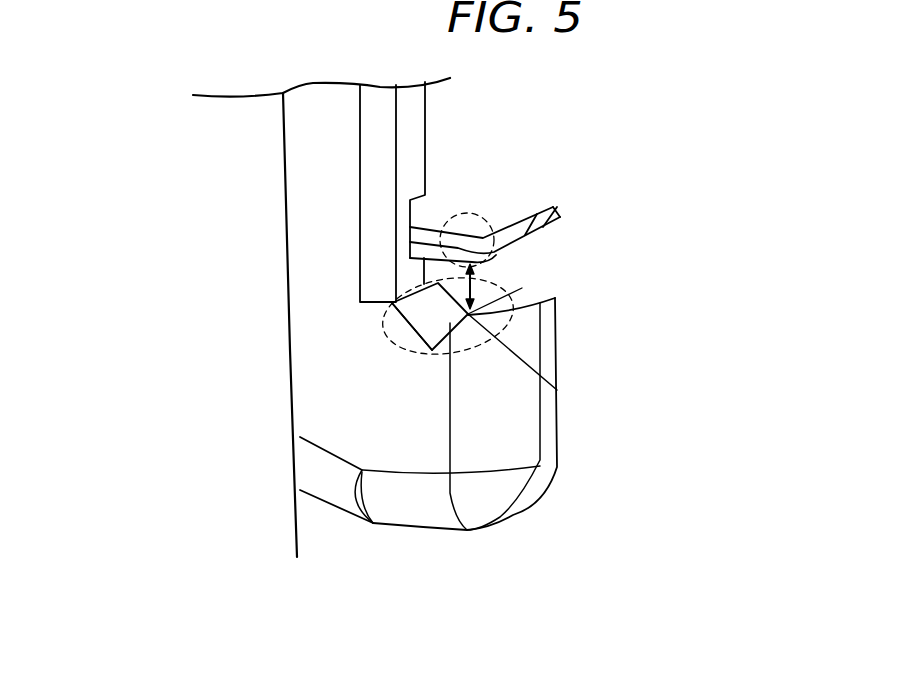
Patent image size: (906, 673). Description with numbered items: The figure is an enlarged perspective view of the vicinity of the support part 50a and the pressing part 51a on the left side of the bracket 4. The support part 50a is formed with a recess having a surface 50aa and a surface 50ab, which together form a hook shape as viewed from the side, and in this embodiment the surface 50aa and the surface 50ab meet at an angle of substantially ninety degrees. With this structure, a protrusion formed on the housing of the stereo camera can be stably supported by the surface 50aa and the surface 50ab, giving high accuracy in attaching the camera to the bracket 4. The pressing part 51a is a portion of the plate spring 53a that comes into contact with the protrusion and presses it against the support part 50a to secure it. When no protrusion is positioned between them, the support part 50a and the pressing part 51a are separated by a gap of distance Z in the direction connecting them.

The bracket 4 is at (552, 488).
The support part 50a is at (423, 317).
The surface 50aa is at (396, 333).
The surface 50ab is at (557, 390).
The pressing part 51a is at (470, 217).
The plate spring 53a is at (563, 208).
The distance Z is at (485, 283).